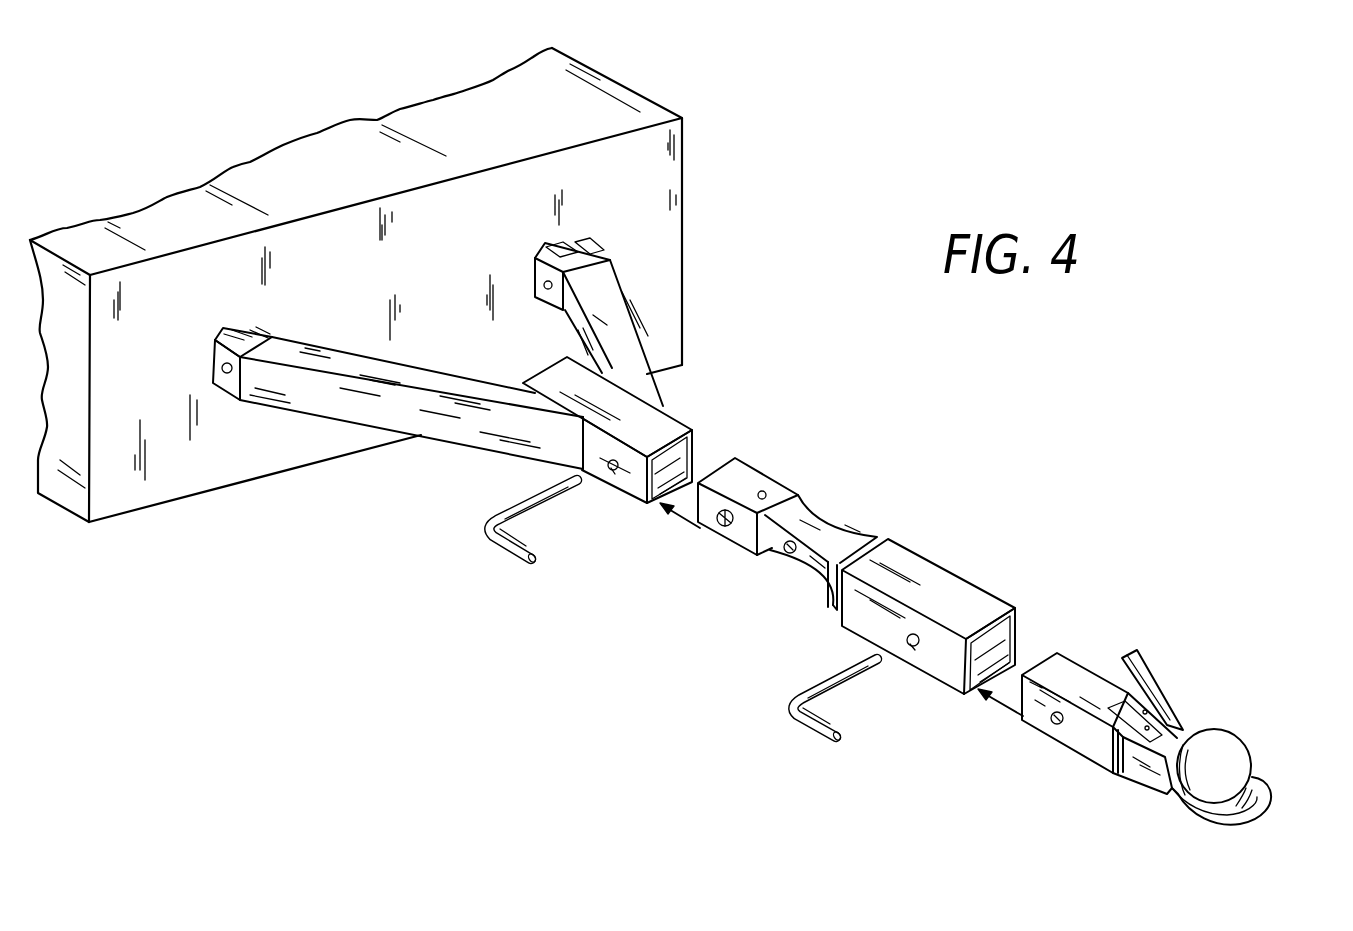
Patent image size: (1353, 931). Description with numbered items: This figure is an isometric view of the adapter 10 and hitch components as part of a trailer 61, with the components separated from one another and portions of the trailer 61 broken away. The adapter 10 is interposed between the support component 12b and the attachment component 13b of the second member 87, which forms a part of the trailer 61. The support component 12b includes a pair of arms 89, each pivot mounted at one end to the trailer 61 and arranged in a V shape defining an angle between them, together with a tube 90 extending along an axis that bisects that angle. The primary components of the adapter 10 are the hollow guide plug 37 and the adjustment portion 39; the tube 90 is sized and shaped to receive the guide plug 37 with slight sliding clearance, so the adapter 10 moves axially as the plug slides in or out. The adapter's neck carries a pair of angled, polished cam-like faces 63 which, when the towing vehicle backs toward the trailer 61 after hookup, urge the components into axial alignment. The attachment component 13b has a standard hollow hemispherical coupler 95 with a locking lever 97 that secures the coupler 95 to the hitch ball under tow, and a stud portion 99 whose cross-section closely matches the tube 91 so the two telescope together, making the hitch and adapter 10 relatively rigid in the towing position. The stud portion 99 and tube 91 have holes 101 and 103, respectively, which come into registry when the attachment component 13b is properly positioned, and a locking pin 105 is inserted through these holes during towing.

The adapter 10 is at (923, 462).
The support component 12b is at (630, 350).
The attachment component 13b is at (1180, 732).
The guide plug 37 is at (753, 458).
The adjustment portion 39 is at (907, 543).
The trailer 61 is at (672, 218).
The cam-like faces 63 is at (826, 522).
The second member 87 is at (998, 755).
The arms 89 is at (327, 398).
The tube 90 is at (575, 399).
The tube 91 is at (977, 585).
The coupler 95 is at (1230, 755).
The locking lever 97 is at (1138, 673).
The stud portion 99 is at (1087, 743).
The hole 101 is at (1058, 725).
The hole 103 is at (913, 650).
The locking pin 105 is at (788, 700).